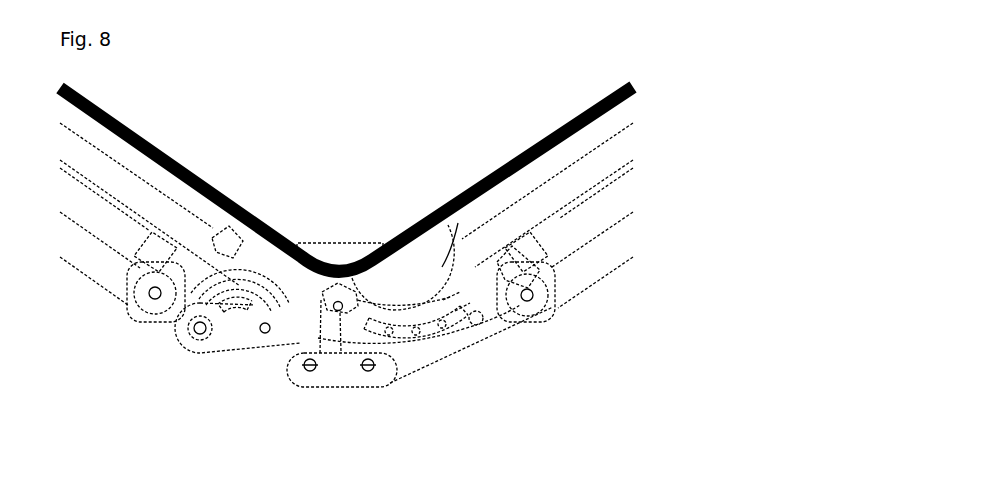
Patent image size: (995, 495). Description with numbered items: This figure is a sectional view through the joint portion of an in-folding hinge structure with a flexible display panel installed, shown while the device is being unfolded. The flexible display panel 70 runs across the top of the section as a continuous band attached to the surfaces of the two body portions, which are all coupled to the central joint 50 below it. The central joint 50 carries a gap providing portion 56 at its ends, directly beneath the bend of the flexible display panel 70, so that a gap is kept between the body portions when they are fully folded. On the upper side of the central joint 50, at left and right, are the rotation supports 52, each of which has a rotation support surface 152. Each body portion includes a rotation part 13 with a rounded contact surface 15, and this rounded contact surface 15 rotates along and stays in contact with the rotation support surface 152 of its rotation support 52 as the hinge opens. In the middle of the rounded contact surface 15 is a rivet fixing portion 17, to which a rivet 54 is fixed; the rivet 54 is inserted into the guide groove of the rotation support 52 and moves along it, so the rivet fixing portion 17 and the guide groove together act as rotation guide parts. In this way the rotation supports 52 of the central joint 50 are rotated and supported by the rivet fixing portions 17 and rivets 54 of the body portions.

The flexible display panel 70 is at (560, 132).
The gap providing portion 56 is at (350, 252).
The rounded contact surface 15 is at (447, 217).
The rotation part 13 is at (263, 276).
The rivet fixing portion 17 is at (252, 328).
The rivet 54 is at (265, 334).
The central joint 50 is at (338, 383).
The rotation support 52 is at (425, 337).
The rotation support surface 152 is at (428, 296).